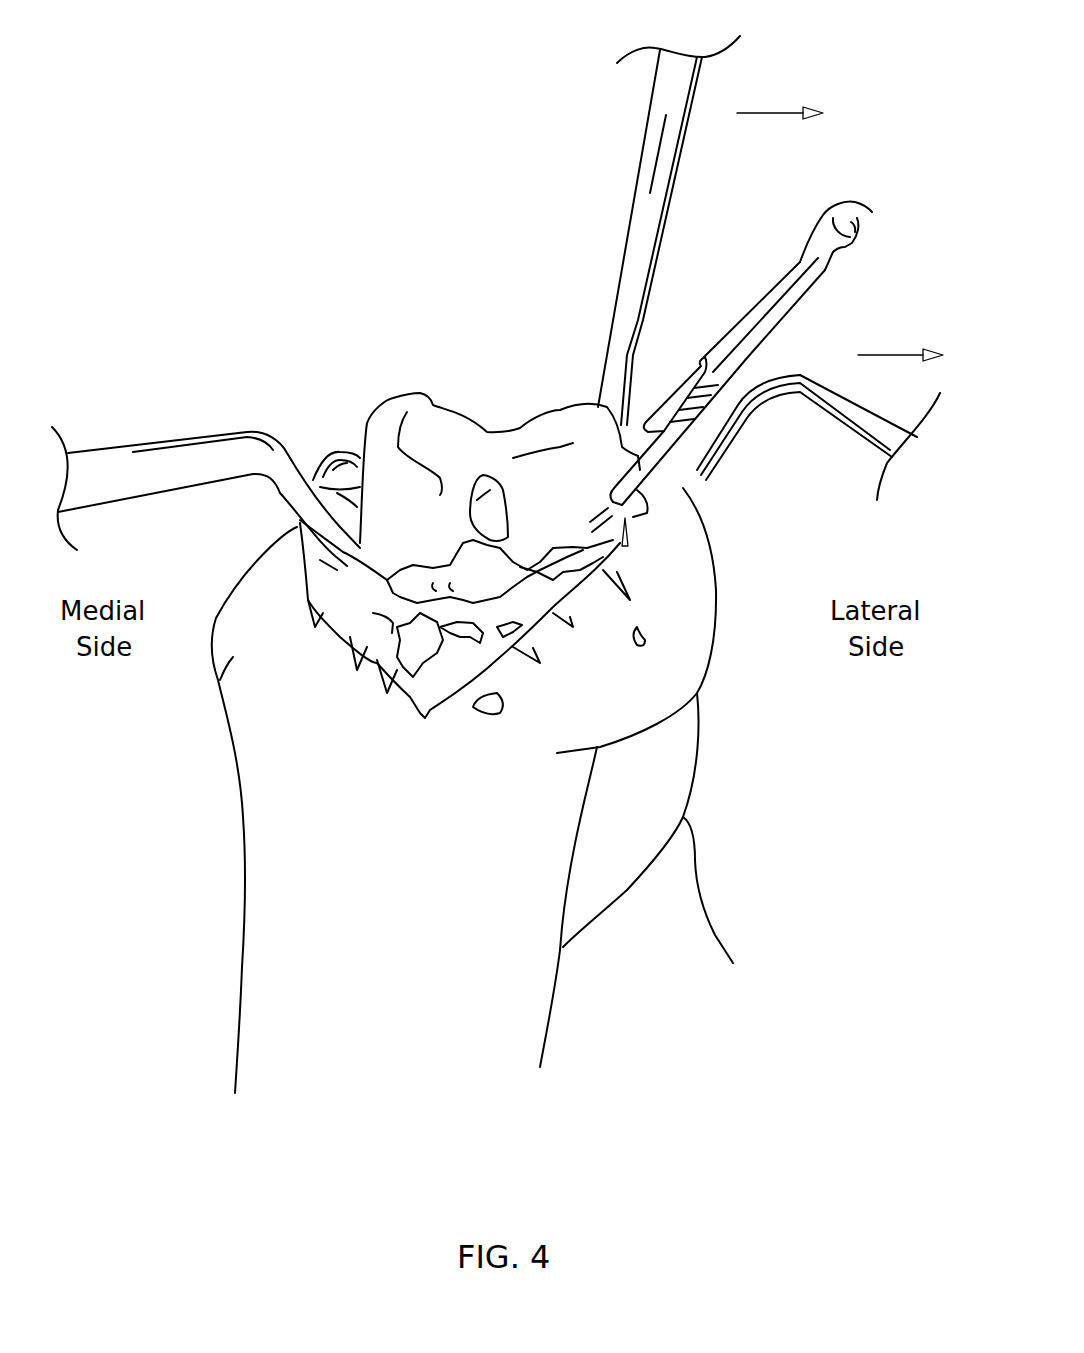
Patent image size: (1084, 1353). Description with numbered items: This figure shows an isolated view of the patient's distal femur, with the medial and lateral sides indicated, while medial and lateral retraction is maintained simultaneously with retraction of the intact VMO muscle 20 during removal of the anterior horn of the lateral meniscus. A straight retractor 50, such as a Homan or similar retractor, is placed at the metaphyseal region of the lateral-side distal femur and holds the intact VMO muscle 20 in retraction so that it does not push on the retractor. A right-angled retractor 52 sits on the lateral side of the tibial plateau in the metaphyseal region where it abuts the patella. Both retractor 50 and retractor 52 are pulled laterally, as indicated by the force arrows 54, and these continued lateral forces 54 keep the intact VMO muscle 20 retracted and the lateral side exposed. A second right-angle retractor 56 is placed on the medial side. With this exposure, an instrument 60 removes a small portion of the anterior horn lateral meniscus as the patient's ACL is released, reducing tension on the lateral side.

The intact VMO muscle 20 is at (623, 547).
The straight retractor 50 is at (643, 215).
The right-angled retractor 52 is at (863, 410).
The force arrows 54 is at (790, 110).
The second right-angle retractor 56 is at (113, 463).
The instrument 60 is at (757, 310).